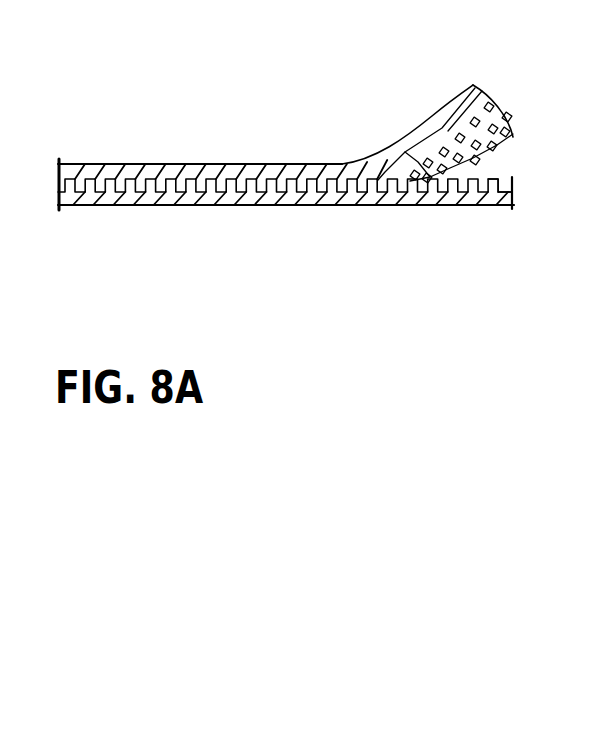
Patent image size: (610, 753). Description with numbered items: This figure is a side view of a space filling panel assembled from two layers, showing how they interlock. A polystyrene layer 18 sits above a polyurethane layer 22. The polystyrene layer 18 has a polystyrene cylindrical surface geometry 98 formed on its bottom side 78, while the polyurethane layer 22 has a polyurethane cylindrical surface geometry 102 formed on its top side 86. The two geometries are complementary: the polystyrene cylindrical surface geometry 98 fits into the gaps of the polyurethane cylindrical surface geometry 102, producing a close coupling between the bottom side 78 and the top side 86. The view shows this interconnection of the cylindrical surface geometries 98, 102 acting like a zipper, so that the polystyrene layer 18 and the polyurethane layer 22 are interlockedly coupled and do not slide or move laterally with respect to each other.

The polystyrene layer 18 is at (163, 164).
The polyurethane layer 22 is at (160, 205).
The bottom side 78 is at (515, 125).
The polystyrene cylindrical surface geometry 98 is at (498, 112).
The top side 86 is at (486, 179).
The polyurethane cylindrical surface geometry 102 is at (493, 180).